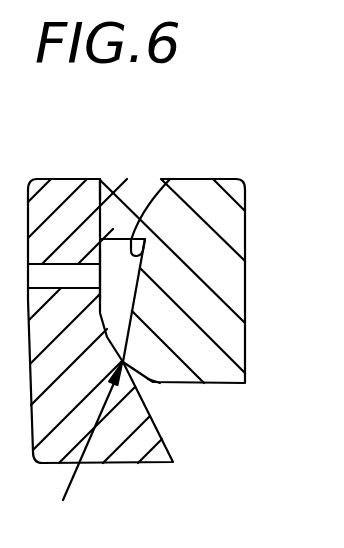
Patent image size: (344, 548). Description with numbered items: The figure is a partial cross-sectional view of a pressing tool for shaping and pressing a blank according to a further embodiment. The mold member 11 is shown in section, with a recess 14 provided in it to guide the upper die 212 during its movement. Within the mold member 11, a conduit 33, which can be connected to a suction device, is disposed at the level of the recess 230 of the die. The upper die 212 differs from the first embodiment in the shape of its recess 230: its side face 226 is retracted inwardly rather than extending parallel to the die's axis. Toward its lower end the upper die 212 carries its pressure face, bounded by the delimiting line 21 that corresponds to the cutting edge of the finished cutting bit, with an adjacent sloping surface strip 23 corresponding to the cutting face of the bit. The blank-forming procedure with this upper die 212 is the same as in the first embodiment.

The mold member 11 is at (132, 447).
The recess 14 is at (128, 179).
The delimiting line 21 is at (75, 472).
The sloping surface strip 23 is at (151, 382).
The conduit 33 is at (58, 276).
The upper die 212 is at (220, 363).
The side face 226 is at (166, 179).
The recess 230 is at (122, 306).